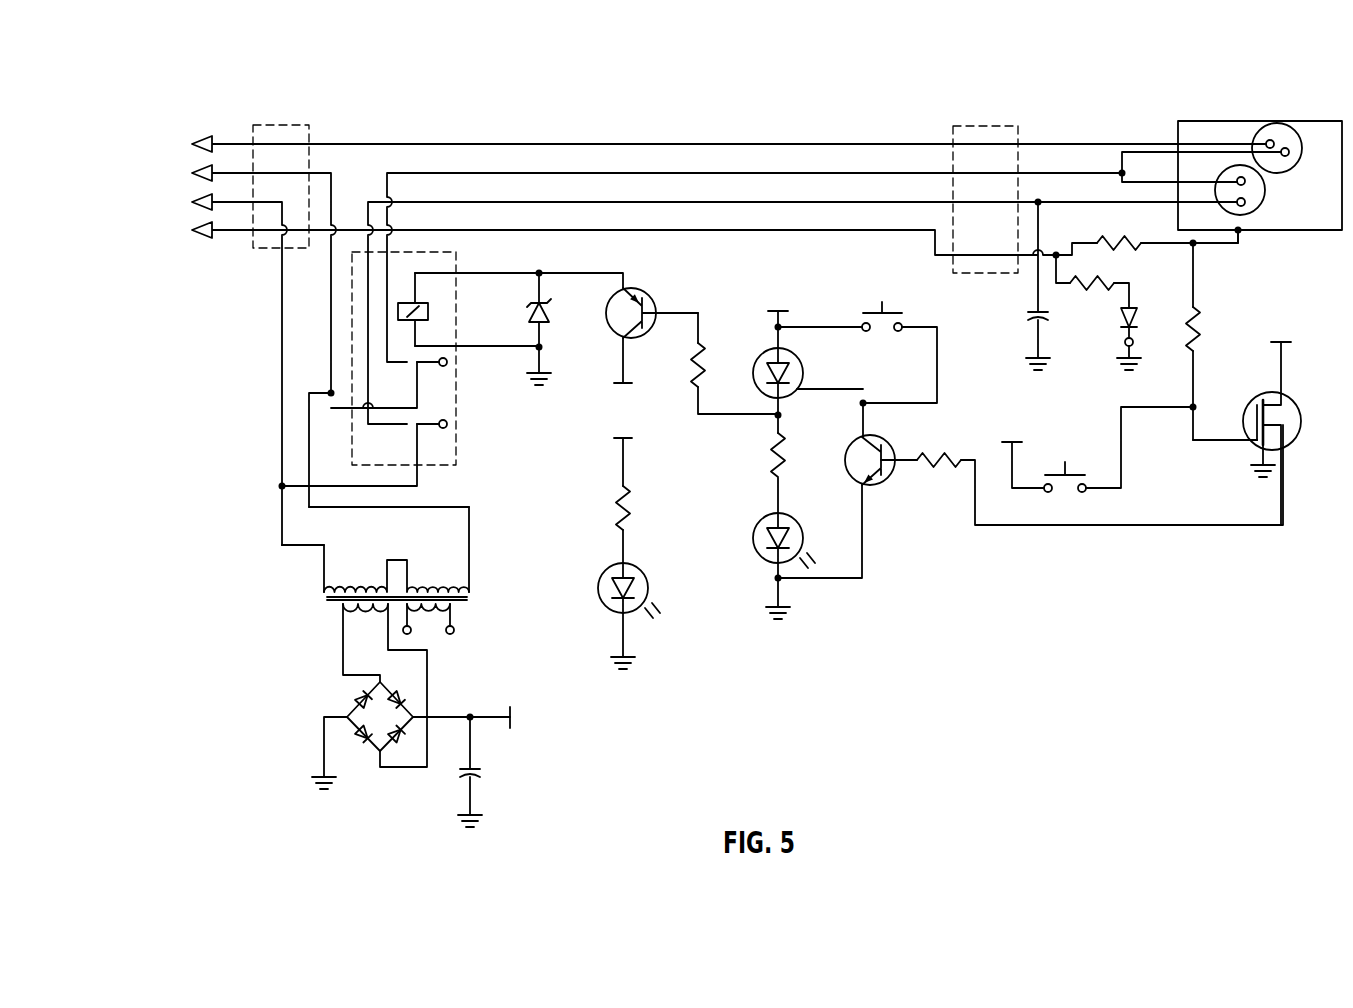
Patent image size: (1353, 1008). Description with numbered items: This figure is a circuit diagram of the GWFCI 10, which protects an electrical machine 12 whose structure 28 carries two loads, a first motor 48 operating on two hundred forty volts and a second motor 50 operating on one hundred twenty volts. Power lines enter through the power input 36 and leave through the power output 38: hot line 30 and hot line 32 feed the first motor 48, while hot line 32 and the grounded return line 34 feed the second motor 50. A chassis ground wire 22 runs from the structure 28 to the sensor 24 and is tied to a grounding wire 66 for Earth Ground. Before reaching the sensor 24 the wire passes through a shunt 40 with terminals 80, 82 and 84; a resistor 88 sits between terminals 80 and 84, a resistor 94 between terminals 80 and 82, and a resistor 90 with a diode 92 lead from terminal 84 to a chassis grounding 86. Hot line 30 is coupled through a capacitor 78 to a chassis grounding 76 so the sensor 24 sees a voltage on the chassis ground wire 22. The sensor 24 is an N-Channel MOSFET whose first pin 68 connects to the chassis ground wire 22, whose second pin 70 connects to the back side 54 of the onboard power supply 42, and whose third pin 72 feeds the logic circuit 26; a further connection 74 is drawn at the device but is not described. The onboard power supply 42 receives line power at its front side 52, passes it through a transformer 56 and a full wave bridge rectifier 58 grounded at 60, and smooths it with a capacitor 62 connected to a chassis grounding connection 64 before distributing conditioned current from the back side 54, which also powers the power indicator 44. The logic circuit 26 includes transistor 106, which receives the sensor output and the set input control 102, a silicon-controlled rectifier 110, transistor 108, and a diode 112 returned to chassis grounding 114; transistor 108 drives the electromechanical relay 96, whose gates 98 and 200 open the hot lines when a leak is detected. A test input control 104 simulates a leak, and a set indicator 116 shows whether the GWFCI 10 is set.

The GWFCI 10 is at (886, 663).
The electrical machine 12 is at (1340, 174).
The chassis ground wire 22 is at (1213, 253).
The sensor 24 is at (1290, 402).
The logic circuit 26 is at (908, 582).
The structure 28 is at (1300, 121).
The hot line 30 is at (451, 202).
The hot line 32 is at (427, 173).
The return line 34 is at (397, 144).
The power input 36 is at (273, 125).
The power output 38 is at (985, 127).
The shunt 40 is at (1274, 302).
The onboard power supply 42 is at (255, 642).
The power indicator 44 is at (598, 588).
The first electrical load/motor 48 is at (1250, 212).
The second electrical load/motor 50 is at (1259, 126).
The front side 52 is at (346, 507).
The back side 54 is at (633, 385).
The transformer 56 is at (316, 601).
The full wave bridge rectifier 58 is at (332, 692).
The grounding of rectifier 60 is at (312, 778).
The capacitor 62 is at (478, 772).
The chassis grounding connection 64 is at (482, 818).
The grounding wire 66 is at (472, 230).
The first pin 68 is at (1253, 448).
The second pin 70 is at (1274, 400).
The third pin 72 is at (1296, 431).
The ground 74 is at (1270, 458).
The chassis grounding 76 is at (1025, 358).
The capacitor 78 is at (1033, 312).
The terminal 80 is at (1189, 247).
The terminal 82 is at (1190, 414).
The terminal 84 is at (1056, 251).
The chassis grounding 86 is at (1115, 357).
The resistor 88 is at (1114, 236).
The resistor 90 is at (1081, 290).
The diode 92 is at (1115, 322).
The resistor 94 is at (1212, 340).
The electromechanical relay 96 is at (457, 262).
The gate 98 is at (417, 370).
The set input control 102 is at (882, 302).
The test input control 104 is at (1065, 462).
The transistor 106 is at (885, 442).
The transistor 108 is at (650, 293).
The silicon-controlled rectifier 110 is at (800, 356).
The diode 112 is at (529, 313).
The chassis grounding 114 is at (545, 372).
The set indicator 116 is at (753, 538).
The gate 200 is at (417, 436).